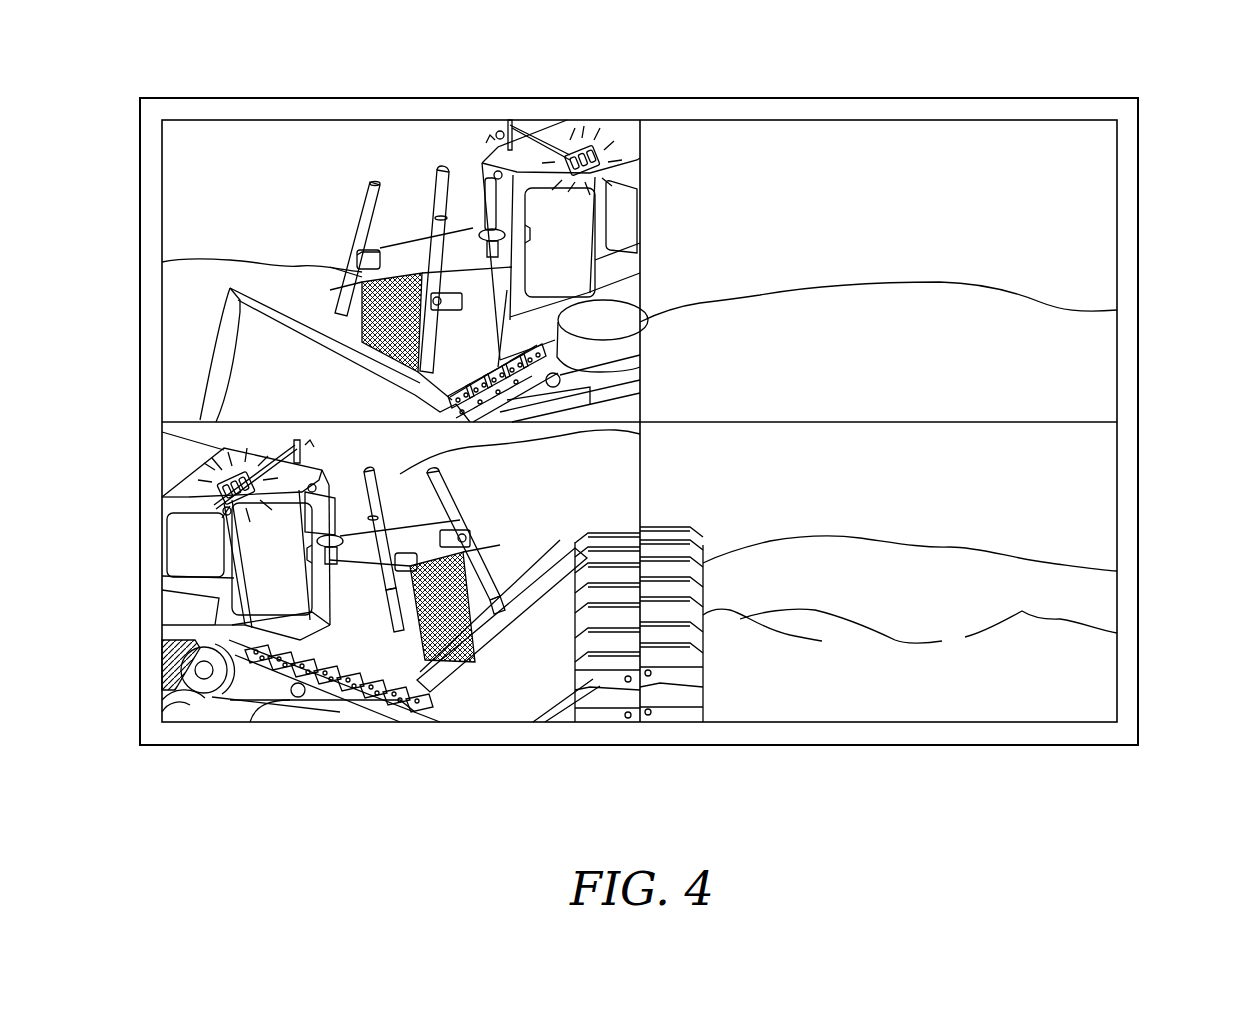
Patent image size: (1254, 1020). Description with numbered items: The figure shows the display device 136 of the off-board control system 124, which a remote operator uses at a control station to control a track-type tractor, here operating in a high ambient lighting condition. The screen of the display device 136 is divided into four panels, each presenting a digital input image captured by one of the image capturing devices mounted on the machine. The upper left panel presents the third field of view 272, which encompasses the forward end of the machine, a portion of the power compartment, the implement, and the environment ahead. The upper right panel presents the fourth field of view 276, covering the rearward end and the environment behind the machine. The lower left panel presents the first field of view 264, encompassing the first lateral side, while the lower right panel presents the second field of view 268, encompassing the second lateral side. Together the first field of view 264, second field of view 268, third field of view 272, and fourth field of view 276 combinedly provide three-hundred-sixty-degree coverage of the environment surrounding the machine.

The off-board control system 124 is at (1088, 97).
The display device 136 is at (1140, 123).
The third field of view 272 is at (190, 160).
The fourth field of view 276 is at (1090, 203).
The first field of view 264 is at (188, 447).
The second field of view 268 is at (1087, 505).